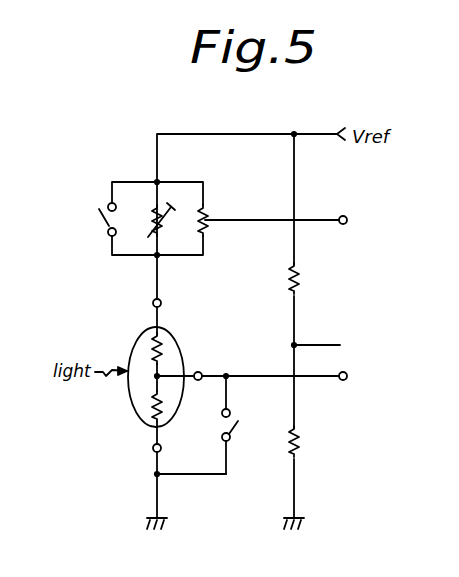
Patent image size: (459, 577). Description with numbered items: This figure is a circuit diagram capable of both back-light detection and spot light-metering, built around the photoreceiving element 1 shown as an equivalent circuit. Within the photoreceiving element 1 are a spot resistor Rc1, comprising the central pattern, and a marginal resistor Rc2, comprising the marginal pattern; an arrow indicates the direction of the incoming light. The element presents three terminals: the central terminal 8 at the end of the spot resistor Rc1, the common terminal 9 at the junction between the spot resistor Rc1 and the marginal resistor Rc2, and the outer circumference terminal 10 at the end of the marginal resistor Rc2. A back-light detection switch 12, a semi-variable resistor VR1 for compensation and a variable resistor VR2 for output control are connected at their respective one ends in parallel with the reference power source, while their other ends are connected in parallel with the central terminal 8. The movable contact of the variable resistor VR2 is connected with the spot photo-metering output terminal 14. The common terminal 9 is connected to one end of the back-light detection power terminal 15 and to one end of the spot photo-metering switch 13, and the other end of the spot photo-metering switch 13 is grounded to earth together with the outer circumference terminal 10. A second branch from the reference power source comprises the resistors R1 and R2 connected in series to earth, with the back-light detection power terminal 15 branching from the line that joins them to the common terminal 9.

The photoreceiving element 1 is at (166, 384).
The central terminal 8 is at (161, 300).
The common terminal 9 is at (203, 372).
The outer circumference terminal 10 is at (152, 449).
The back-light detection switch 12 is at (101, 221).
The spot photo-metering switch 13 is at (232, 440).
The spot photo-metering output terminal 14 is at (343, 215).
The back-light detection power terminal 15 is at (349, 375).
The spot resistor Rc1 is at (168, 352).
The marginal resistor Rc2 is at (166, 418).
The resistor R1 is at (300, 273).
The resistor R2 is at (303, 440).
The semi-variable resistor for compensation VR1 is at (172, 214).
The variable resistor for output control VR2 is at (211, 211).